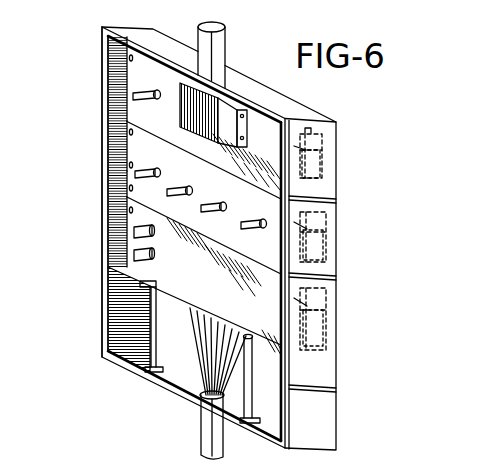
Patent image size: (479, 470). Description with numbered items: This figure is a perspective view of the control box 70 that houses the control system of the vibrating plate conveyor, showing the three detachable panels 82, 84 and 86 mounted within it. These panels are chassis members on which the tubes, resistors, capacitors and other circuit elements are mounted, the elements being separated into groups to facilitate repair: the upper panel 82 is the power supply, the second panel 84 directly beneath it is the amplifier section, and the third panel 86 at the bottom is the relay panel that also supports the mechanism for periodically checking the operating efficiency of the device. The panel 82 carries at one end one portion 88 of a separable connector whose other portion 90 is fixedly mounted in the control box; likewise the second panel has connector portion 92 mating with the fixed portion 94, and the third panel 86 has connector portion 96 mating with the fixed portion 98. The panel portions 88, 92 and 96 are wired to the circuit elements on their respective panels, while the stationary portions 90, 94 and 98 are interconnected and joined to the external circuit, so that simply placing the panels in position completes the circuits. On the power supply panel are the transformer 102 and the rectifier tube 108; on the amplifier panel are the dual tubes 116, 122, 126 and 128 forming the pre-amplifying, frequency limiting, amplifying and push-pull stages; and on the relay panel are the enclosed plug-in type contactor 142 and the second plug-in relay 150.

The control box 70 is at (323, 433).
The detachable panel 82 is at (125, 112).
The detachable panel 84 is at (122, 152).
The detachable panel 86 is at (121, 222).
The separable connector portion 88 is at (333, 138).
The separable connector portion 90 is at (330, 163).
The separable connector portion 92 is at (330, 214).
The separable connector portion 94 is at (330, 240).
The separable connector portion 96 is at (332, 298).
The separable connector portion 98 is at (335, 326).
The transformer 102 is at (221, 113).
The rectifier tube 108 is at (122, 73).
The dual tube 116 is at (119, 182).
The dual tube 122 is at (183, 176).
The dual tube 126 is at (222, 197).
The dual tube 128 is at (253, 222).
The enclosed plug-in type contactor 142 is at (128, 272).
The relay 150 is at (116, 281).